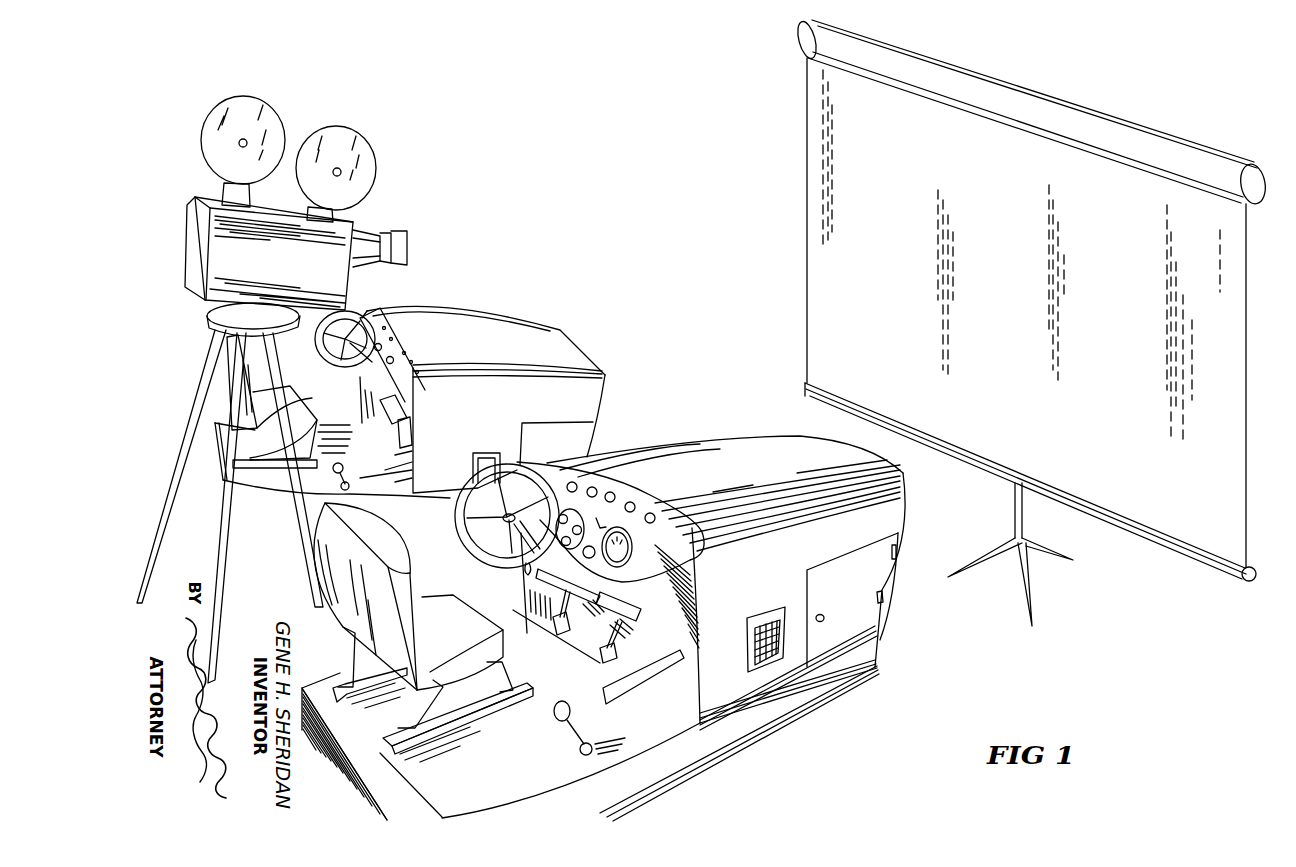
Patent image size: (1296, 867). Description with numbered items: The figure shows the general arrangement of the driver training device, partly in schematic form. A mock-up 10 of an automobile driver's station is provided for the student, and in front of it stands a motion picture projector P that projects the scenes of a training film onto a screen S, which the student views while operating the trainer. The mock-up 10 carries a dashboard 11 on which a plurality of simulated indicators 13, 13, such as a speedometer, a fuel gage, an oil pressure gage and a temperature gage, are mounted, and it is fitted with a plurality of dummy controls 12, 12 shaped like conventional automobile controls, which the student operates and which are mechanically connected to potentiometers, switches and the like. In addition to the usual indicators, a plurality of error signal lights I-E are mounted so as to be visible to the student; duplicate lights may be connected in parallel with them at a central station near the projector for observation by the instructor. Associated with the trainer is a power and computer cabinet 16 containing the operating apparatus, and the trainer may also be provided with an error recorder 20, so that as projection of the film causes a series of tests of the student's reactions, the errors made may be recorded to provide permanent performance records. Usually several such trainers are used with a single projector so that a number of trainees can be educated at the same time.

The motion picture projector P is at (218, 276).
The screen S is at (827, 265).
The mock-up of an automobile driver's station 10 is at (790, 478).
The dashboard 11 is at (650, 570).
The dummy controls 12 is at (615, 631).
The simulated indicators 13 is at (526, 566).
The power and computer cabinet 16 is at (870, 614).
The error recorder 20 is at (772, 663).
The error signal lights I-E is at (591, 491).